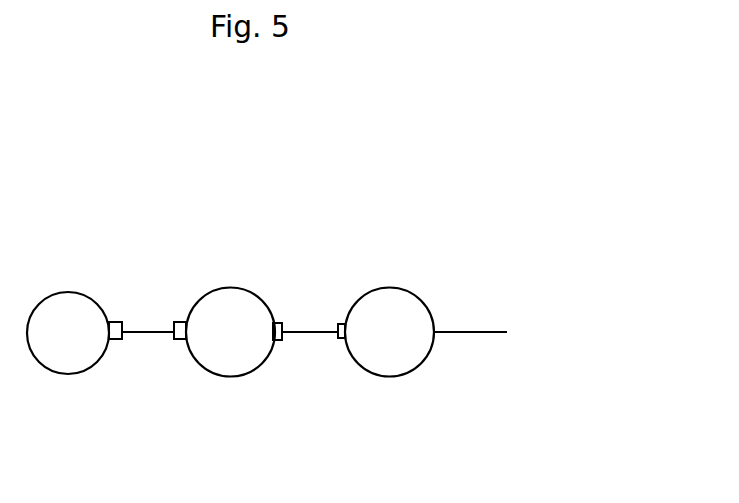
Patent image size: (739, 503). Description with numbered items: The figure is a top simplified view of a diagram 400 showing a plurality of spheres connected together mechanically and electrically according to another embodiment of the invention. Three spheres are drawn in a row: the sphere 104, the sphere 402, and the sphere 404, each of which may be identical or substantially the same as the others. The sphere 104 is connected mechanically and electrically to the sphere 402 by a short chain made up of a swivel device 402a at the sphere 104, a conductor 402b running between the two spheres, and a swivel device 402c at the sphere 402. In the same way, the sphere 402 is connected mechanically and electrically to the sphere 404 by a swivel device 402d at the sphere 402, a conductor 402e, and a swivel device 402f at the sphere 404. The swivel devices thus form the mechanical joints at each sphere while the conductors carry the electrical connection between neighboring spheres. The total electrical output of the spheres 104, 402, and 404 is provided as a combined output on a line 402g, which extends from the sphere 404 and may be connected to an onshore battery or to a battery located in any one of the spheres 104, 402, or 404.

The diagram 400 is at (384, 204).
The sphere 104 is at (57, 313).
The sphere 402 is at (230, 353).
The swivel device 402a is at (117, 328).
The conductor 402b is at (143, 333).
The swivel device 402c is at (181, 330).
The swivel device 402d is at (278, 332).
The conductor 402e is at (313, 335).
The swivel device 402f is at (341, 338).
The line 402g is at (457, 335).
The sphere 404 is at (380, 349).